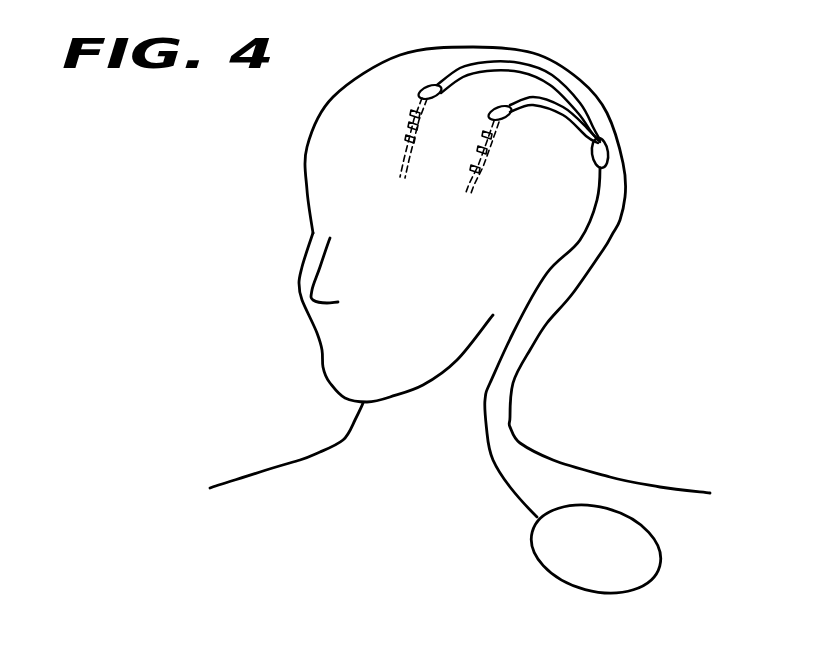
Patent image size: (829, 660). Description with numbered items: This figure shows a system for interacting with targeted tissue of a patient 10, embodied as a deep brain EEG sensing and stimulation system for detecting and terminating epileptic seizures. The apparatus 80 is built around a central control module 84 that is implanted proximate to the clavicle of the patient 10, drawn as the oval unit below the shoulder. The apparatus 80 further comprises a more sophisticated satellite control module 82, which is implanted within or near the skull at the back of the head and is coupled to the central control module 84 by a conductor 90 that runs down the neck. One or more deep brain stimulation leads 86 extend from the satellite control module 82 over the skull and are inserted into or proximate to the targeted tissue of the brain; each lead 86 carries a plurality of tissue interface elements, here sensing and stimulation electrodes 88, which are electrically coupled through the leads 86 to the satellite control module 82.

The patient 10 is at (624, 221).
The apparatus 80 is at (547, 273).
The satellite control module 82 is at (607, 155).
The central control module 84 is at (660, 546).
The deep brain stimulation leads 86 is at (450, 157).
The sensing and stimulation electrodes 88 is at (413, 110).
The conductor 90 is at (492, 455).